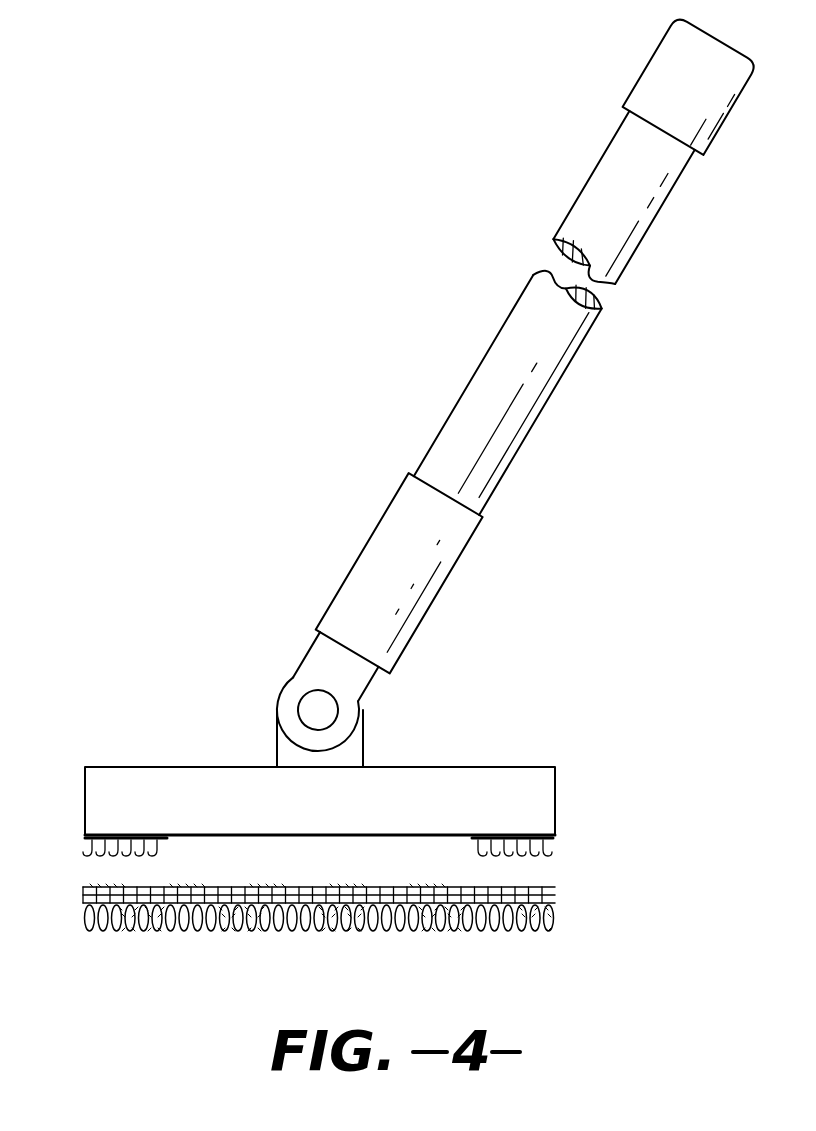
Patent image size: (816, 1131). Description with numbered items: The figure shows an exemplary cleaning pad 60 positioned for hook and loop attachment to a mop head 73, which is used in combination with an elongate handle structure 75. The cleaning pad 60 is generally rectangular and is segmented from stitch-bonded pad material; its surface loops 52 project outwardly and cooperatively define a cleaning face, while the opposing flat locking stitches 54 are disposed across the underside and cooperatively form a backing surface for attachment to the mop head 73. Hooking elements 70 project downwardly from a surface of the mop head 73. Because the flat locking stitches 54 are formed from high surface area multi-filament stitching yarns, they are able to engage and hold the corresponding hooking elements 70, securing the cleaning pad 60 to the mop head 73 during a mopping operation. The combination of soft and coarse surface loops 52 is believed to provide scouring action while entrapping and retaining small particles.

The elongate handle structure 75 is at (553, 388).
The mop head 73 is at (188, 766).
The hooking elements 70 is at (83, 847).
The cleaning pad 60 is at (354, 915).
The flat locking stitches 54 is at (240, 887).
The surface loops 52 is at (462, 931).